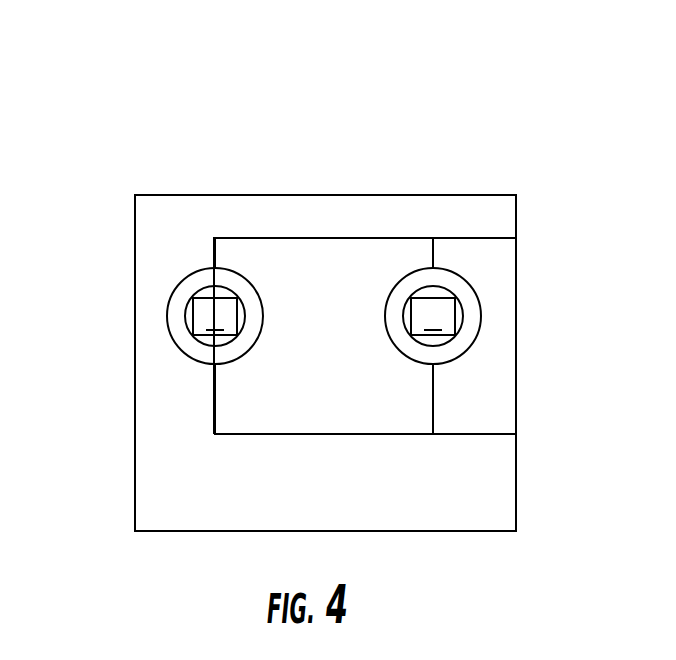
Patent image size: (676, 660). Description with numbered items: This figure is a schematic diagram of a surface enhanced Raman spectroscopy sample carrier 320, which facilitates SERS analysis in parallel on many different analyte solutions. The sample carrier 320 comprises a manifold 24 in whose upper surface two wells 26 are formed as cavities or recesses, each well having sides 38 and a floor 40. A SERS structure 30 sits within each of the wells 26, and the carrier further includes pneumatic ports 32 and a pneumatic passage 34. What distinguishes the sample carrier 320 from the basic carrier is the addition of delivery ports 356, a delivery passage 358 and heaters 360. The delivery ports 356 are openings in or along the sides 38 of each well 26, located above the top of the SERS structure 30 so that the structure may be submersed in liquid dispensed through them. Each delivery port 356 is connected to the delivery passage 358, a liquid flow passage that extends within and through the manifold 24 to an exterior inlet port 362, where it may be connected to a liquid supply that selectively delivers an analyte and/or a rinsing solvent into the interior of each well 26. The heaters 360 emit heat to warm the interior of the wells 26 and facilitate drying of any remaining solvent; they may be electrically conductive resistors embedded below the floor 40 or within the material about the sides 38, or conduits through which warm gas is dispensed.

The sample carrier 320 is at (141, 141).
The manifold 24 is at (237, 195).
The delivery passage 358 is at (350, 238).
The sides 38 is at (459, 278).
The exterior inlet port 362 is at (516, 237).
The delivery ports 356 is at (212, 268).
The heaters 360 is at (190, 315).
The wells 26 is at (167, 342).
The SERS structures 30 is at (215, 342).
The pneumatic ports 32 is at (212, 364).
The pneumatic passage 34 is at (287, 434).
The floor 40 is at (393, 328).